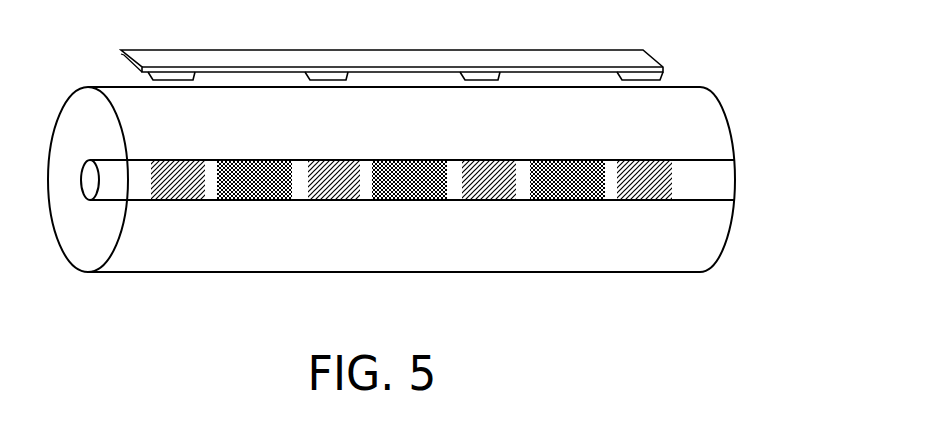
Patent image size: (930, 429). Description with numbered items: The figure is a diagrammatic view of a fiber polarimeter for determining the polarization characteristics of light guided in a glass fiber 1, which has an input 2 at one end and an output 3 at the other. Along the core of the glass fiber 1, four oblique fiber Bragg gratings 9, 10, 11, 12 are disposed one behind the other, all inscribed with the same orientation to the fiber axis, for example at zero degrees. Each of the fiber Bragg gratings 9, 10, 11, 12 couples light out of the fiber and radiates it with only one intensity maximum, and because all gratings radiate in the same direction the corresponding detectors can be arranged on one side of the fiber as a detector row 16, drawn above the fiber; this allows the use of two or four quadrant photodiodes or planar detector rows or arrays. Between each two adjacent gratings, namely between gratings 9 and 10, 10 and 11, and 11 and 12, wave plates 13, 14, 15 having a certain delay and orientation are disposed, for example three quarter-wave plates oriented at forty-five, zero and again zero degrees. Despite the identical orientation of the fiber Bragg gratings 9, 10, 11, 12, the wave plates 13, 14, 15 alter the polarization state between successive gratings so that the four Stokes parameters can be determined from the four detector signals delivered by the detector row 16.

The glass fiber 1 is at (458, 272).
The input 2 is at (81, 182).
The output 3 is at (732, 215).
The fiber Bragg grating 9 is at (180, 203).
The fiber Bragg grating 10 is at (335, 203).
The fiber Bragg grating 11 is at (495, 202).
The fiber Bragg grating 12 is at (648, 200).
The wave plate 13 is at (260, 203).
The wave plate 14 is at (413, 202).
The wave plate 15 is at (568, 202).
The detector row 16 is at (545, 51).